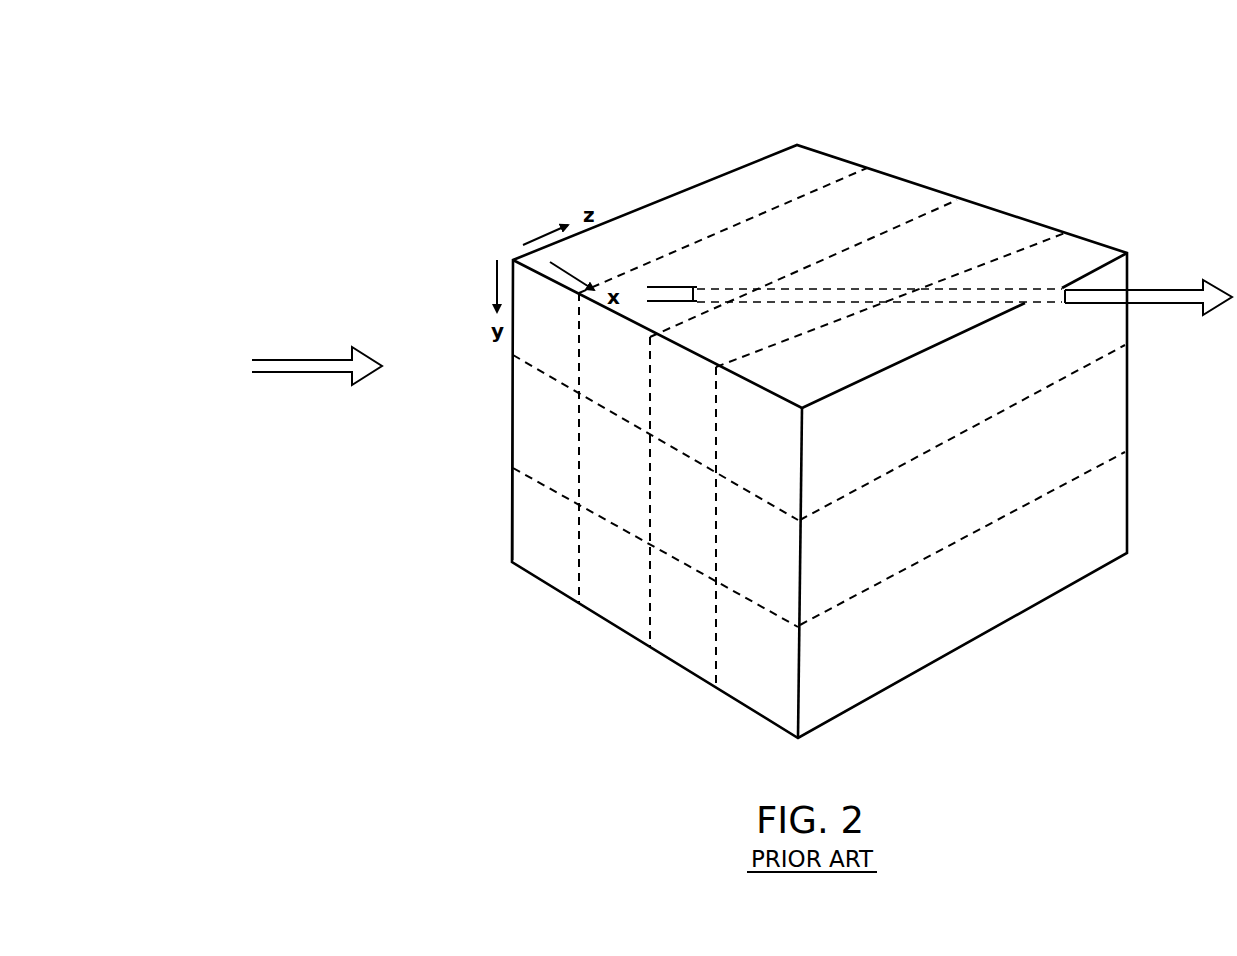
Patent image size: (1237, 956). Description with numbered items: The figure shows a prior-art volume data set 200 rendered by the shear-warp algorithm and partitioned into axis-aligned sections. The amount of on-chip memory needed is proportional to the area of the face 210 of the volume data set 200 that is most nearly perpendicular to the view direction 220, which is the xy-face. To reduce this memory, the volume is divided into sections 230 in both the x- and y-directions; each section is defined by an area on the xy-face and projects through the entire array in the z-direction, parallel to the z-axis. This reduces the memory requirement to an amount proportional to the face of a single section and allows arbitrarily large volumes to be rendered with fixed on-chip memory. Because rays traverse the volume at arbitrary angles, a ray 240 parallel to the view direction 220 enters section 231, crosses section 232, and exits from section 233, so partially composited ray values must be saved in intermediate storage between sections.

The volume data set 200 is at (797, 140).
The face 210 is at (504, 360).
The view direction 220 is at (317, 378).
The sections 230 is at (540, 547).
The section 231 is at (892, 167).
The section 232 is at (1007, 195).
The section 233 is at (1071, 228).
The ray 240 is at (1148, 286).